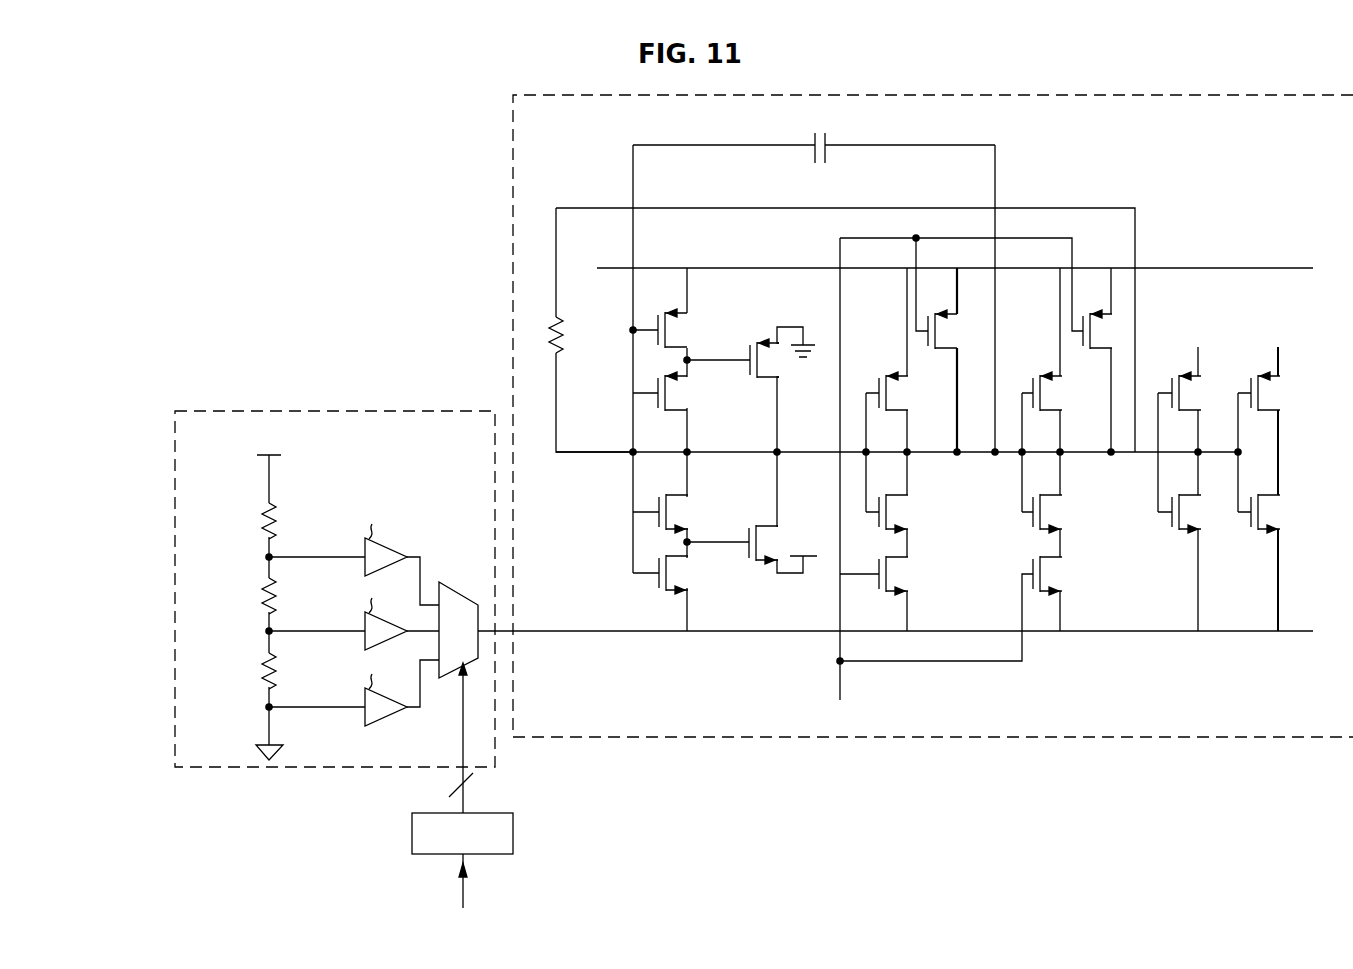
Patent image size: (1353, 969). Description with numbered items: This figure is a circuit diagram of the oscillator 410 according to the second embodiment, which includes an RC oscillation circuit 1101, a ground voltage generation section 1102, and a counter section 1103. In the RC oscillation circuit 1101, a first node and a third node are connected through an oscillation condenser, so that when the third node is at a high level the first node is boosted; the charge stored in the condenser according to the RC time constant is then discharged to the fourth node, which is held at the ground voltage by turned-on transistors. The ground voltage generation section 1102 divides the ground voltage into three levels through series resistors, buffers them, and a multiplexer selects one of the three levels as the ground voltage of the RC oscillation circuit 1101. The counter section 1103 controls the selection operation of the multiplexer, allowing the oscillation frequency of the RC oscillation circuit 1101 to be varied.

The oscillator 410 is at (1290, 75).
The RC oscillation circuit 1101 is at (941, 737).
The ground voltage generation section 1102 is at (375, 411).
The counter section 1103 is at (513, 833).